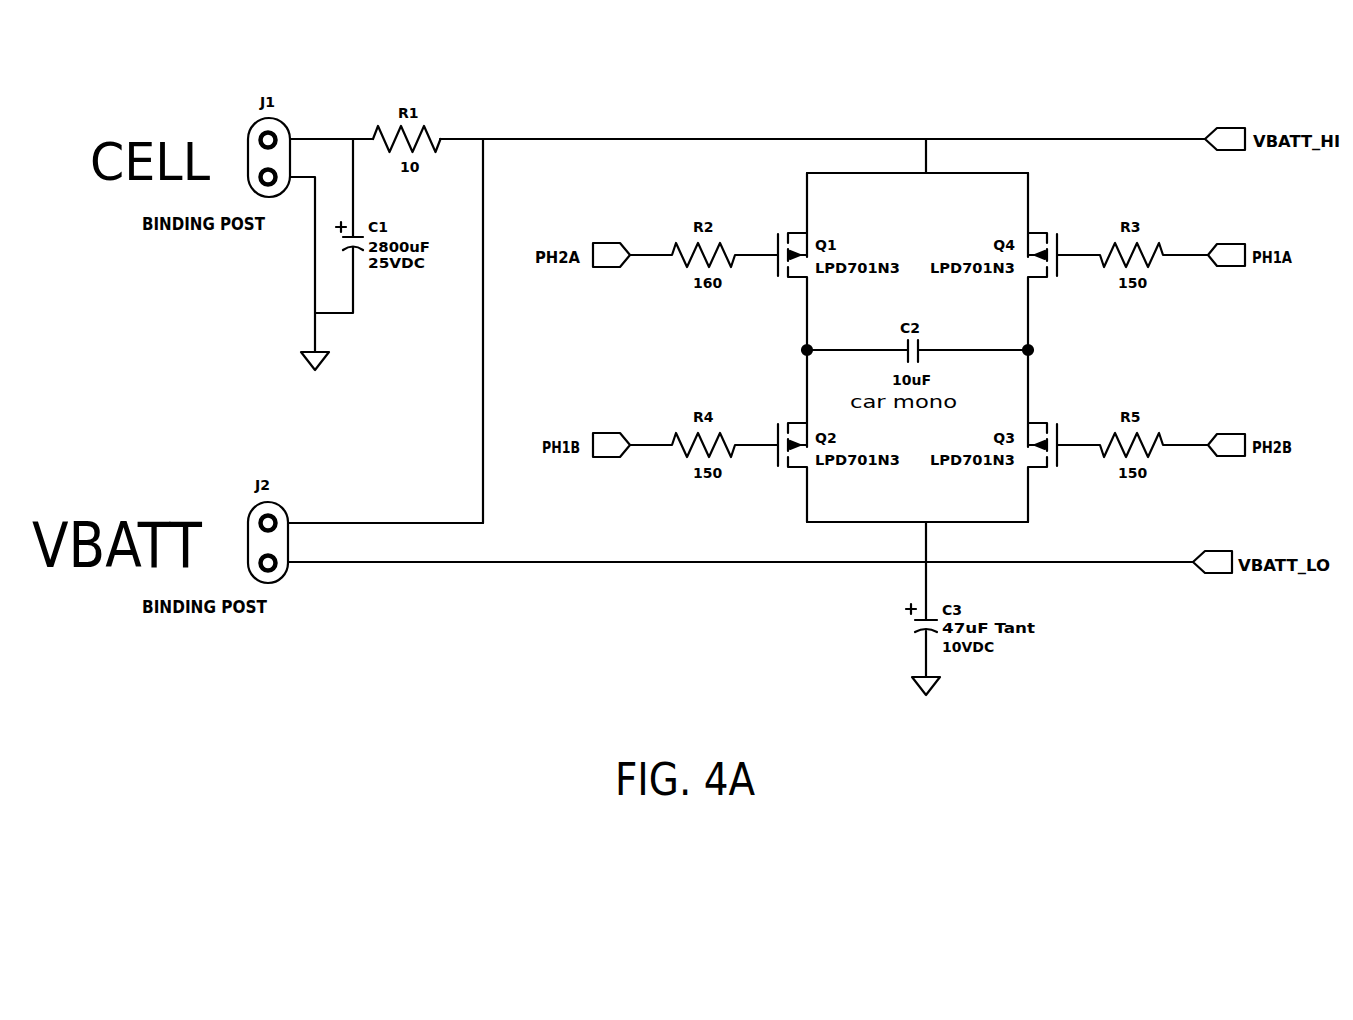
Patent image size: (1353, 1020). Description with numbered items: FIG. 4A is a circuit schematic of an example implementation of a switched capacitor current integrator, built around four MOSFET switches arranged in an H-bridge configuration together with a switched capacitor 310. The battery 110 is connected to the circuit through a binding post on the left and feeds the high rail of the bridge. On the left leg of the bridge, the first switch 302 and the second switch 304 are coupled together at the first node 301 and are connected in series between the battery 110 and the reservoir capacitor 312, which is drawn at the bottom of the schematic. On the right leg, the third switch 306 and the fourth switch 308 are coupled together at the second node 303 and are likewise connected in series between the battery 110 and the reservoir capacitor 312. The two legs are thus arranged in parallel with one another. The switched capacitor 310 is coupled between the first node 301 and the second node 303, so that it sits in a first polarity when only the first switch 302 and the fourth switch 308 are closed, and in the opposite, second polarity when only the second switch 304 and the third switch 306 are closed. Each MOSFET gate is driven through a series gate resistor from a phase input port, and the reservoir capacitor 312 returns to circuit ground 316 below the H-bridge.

The battery 110 is at (235, 509).
The first node 301 is at (803, 352).
The first switch 302 is at (764, 234).
The second node 303 is at (1032, 352).
The second switch 304 is at (766, 476).
The third switch 306 is at (1065, 229).
The fourth switch 308 is at (1065, 479).
The switched capacitor 310 is at (917, 335).
The reservoir capacitor 312 is at (898, 627).
The ground 316 is at (945, 689).